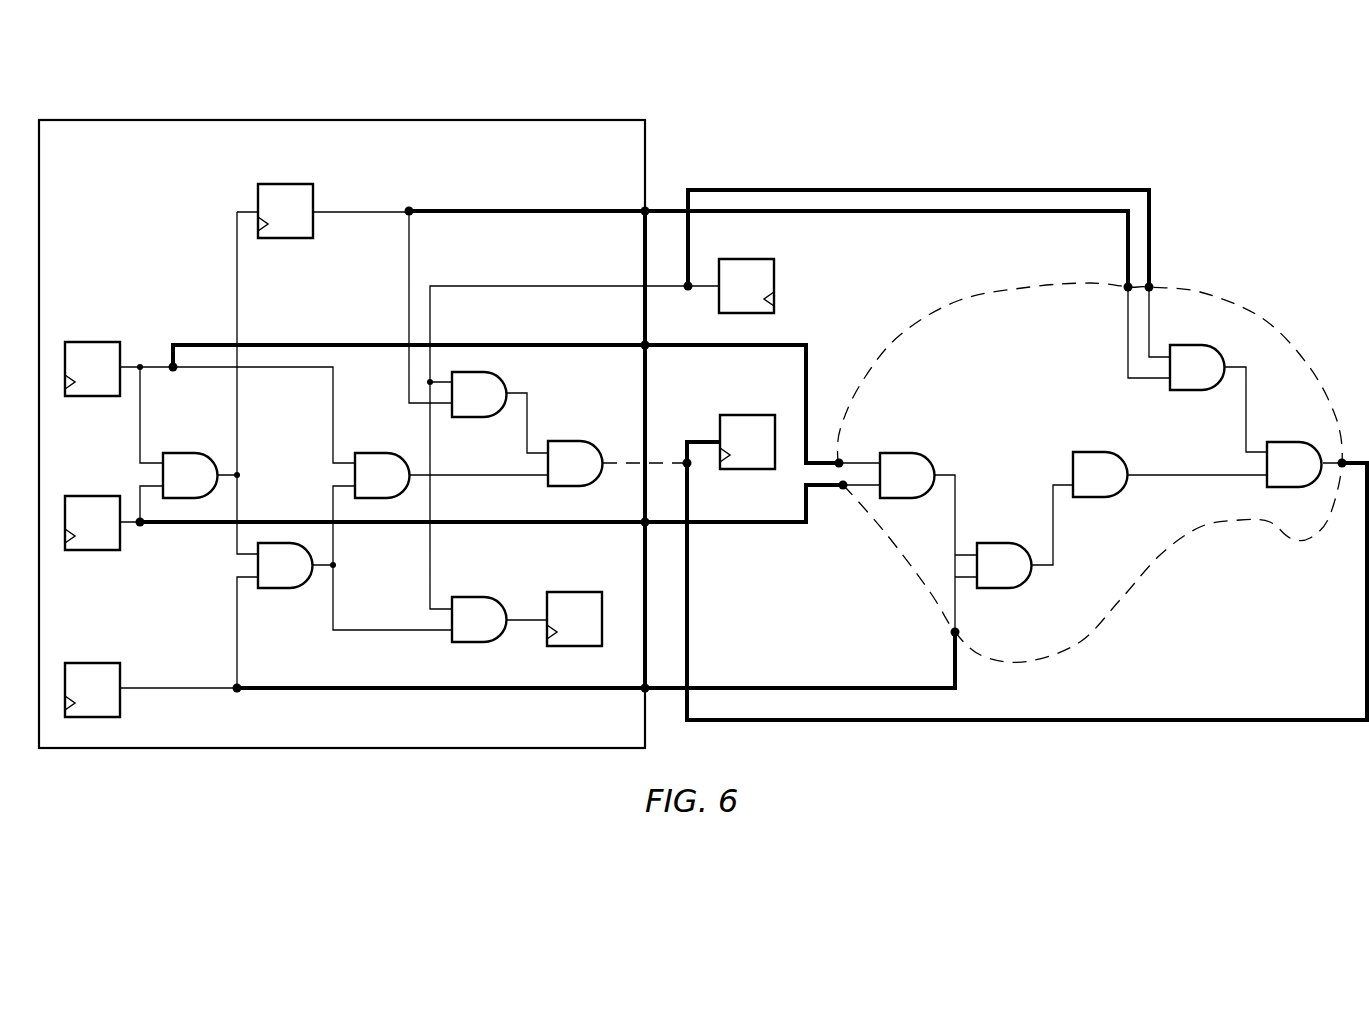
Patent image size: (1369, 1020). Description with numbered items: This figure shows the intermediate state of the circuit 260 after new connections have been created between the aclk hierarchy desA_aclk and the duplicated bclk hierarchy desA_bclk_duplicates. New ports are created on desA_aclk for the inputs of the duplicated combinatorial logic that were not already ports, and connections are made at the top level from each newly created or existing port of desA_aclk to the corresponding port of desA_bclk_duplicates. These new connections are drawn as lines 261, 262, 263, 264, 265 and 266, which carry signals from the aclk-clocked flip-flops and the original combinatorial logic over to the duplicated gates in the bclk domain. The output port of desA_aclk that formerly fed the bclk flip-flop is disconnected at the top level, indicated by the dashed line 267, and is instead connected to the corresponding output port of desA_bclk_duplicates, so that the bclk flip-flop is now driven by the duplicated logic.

The circuit design with clock domain crossings 260 is at (1045, 115).
The line 261 is at (905, 190).
The line 262 is at (515, 210).
The line 263 is at (808, 366).
The line 264 is at (752, 527).
The line 265 is at (302, 687).
The line 266 is at (1192, 722).
The dashed line 267 is at (625, 461).